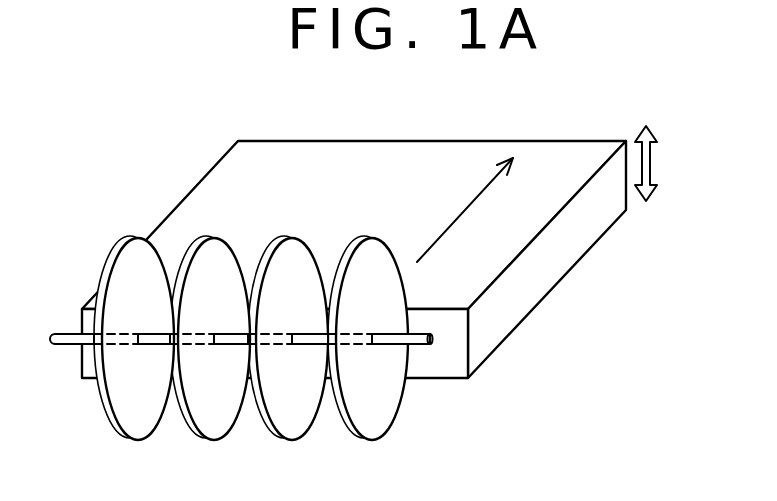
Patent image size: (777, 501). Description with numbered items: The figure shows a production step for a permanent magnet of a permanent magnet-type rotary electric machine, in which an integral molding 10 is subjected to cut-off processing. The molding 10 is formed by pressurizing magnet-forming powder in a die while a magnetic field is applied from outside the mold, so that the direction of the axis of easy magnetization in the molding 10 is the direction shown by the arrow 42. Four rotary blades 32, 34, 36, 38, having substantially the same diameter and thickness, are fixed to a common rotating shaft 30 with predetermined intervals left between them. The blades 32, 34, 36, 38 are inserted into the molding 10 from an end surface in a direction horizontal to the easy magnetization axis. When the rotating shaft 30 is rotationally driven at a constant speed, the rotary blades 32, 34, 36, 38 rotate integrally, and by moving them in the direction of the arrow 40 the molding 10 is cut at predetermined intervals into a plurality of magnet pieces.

The integral molding 10 is at (580, 141).
The rotating shaft 30 is at (62, 346).
The rotary blade 32 is at (144, 424).
The rotary blade 34 is at (220, 424).
The rotary blade 36 is at (298, 424).
The rotary blade 38 is at (378, 424).
The arrow 40 is at (467, 202).
The arrow 42 is at (650, 166).